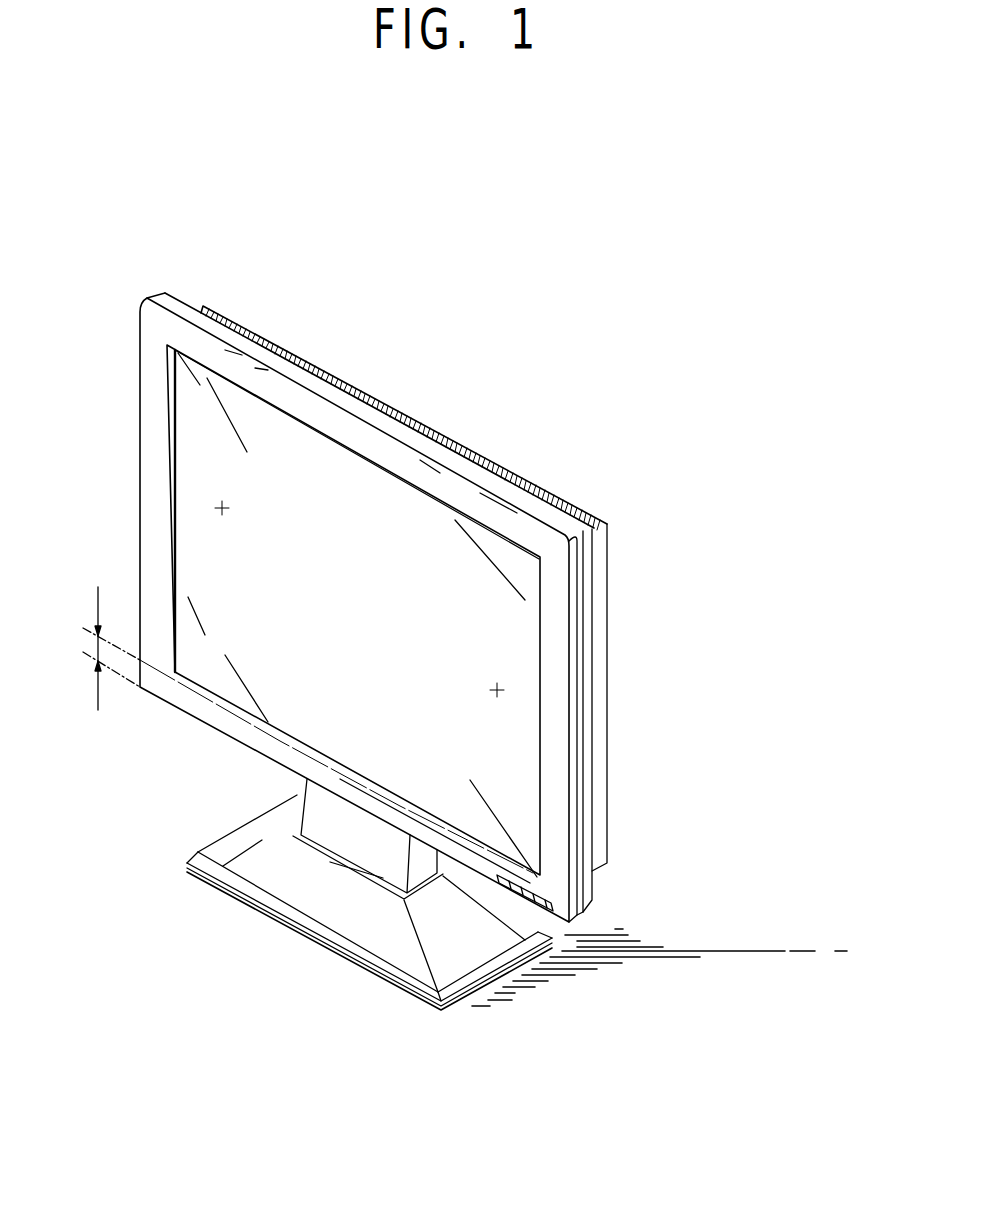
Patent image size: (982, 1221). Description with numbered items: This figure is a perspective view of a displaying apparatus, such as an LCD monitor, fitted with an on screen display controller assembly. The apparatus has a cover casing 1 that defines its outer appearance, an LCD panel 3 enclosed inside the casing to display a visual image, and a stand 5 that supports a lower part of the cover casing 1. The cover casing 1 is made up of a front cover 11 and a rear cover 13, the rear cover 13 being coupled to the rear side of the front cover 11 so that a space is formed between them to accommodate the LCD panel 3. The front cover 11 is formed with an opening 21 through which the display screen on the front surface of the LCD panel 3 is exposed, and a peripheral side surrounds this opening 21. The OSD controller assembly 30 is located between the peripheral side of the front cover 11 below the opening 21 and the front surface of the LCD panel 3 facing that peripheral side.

The cover casing 1 is at (210, 194).
The front cover 11 is at (142, 318).
The rear cover 13 is at (178, 308).
The opening 21 is at (181, 503).
The LCD panel 3 is at (357, 602).
The stand 5 is at (362, 928).
The OSD controller assembly 30 is at (517, 900).